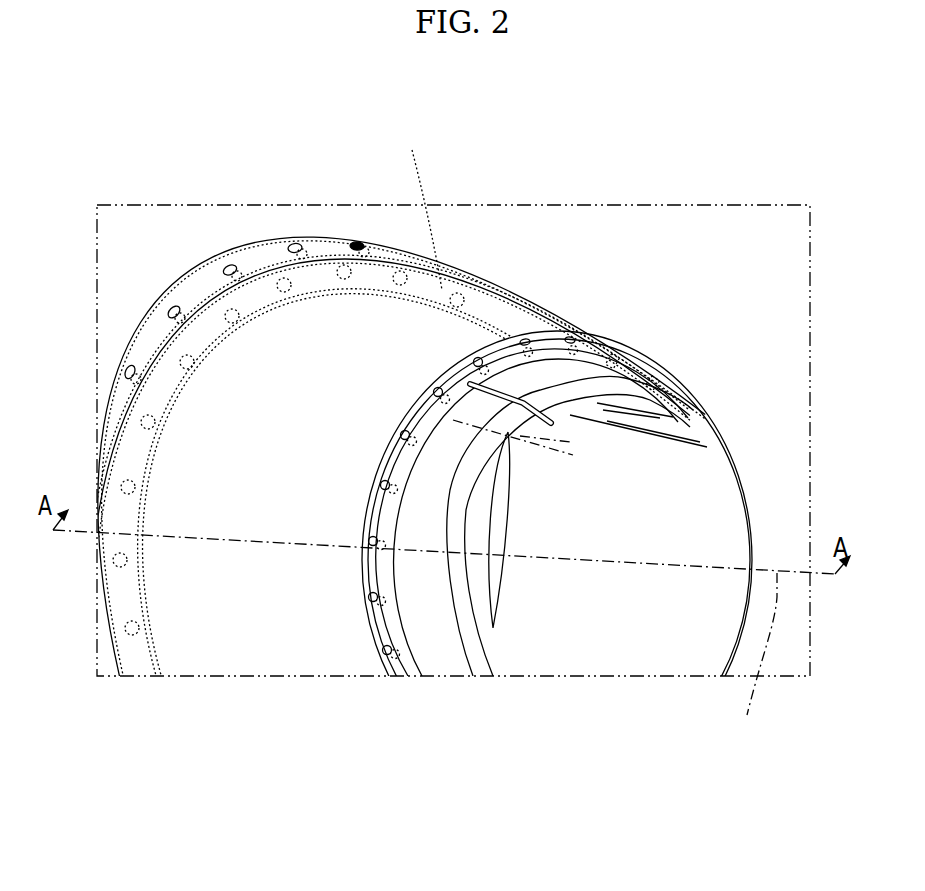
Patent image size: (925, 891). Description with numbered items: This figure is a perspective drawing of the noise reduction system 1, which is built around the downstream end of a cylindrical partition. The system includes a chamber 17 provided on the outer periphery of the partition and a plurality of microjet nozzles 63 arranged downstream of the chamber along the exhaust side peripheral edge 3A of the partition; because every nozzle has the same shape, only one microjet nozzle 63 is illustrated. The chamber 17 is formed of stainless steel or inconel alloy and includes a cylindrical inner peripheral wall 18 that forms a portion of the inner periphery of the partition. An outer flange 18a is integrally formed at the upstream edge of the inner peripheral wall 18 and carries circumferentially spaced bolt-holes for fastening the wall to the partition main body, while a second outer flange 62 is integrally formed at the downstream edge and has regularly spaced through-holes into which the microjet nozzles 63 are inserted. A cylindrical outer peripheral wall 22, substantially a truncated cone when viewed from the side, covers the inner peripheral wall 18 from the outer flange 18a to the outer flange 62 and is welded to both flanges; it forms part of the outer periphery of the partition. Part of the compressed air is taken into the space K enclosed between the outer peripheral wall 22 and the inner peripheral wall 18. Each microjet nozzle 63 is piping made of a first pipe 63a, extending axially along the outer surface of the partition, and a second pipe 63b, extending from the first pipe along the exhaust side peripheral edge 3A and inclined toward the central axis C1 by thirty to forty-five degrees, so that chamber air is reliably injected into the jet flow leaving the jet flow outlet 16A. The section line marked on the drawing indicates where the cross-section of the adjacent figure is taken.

The noise reduction system 1 is at (443, 401).
The chamber 17 is at (323, 240).
The inner peripheral wall 18 is at (268, 367).
The outer flange 18a is at (200, 300).
The space K is at (422, 204).
The outer peripheral wall 22 is at (497, 392).
The outer flange 62 is at (586, 359).
The microjet nozzle 63 is at (542, 371).
The first pipe 63a is at (540, 440).
The second pipe 63b is at (574, 352).
The exhaust side peripheral edge 3A is at (443, 404).
The jet flow outlet 16A is at (683, 490).
The central axis C1 is at (756, 662).